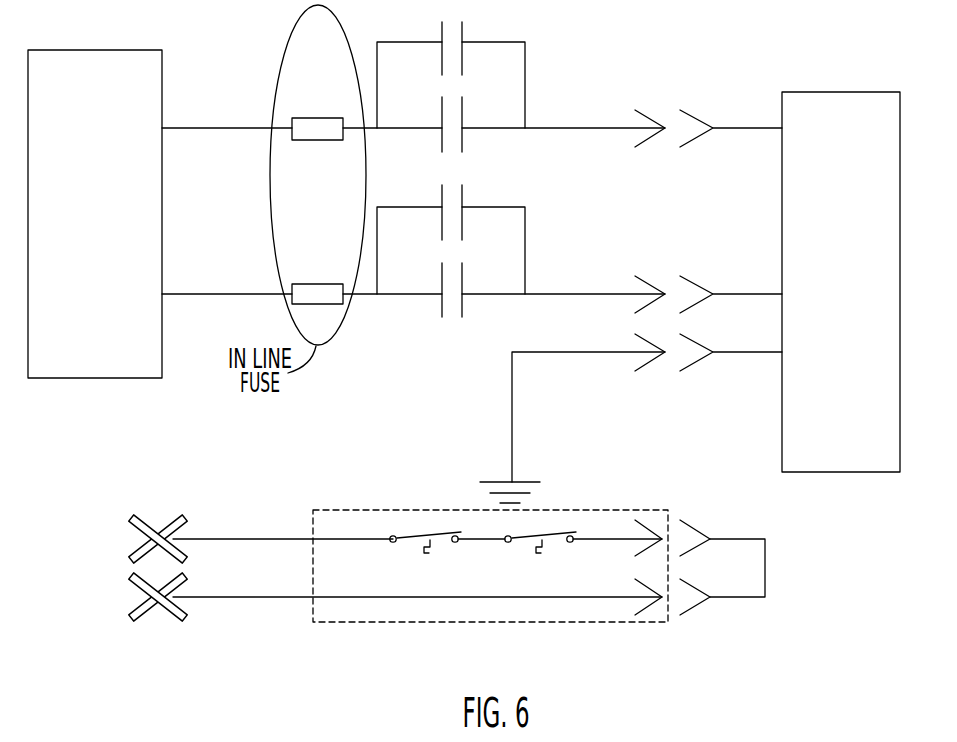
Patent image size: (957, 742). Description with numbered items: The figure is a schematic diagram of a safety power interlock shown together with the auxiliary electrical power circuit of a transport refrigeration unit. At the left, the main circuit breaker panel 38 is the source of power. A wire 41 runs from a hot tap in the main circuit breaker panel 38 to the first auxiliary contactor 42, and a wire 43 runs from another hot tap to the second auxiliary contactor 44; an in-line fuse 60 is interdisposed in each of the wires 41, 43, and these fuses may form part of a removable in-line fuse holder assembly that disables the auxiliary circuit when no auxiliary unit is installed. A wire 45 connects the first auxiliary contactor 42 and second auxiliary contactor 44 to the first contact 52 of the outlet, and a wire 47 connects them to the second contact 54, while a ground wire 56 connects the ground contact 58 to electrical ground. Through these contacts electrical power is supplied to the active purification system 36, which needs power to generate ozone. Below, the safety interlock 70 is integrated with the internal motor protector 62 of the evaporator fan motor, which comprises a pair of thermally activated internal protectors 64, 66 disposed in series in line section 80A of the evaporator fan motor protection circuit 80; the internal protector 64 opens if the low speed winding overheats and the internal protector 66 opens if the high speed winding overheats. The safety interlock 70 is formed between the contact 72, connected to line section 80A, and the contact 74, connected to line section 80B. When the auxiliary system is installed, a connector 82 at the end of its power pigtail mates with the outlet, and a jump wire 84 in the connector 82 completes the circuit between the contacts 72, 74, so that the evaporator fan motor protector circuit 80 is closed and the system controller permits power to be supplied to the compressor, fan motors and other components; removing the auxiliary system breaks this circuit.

The active purification system 36 is at (806, 92).
The main circuit breaker panel 38 is at (128, 50).
The wire 41 is at (263, 127).
The first auxiliary contactor 42 is at (463, 108).
The wire 43 is at (263, 293).
The second auxiliary contactor 44 is at (463, 28).
The wire 45 is at (585, 130).
The wire 47 is at (585, 293).
The first contact 52 is at (639, 111).
The second contact 54 is at (639, 279).
The ground wire 56 is at (605, 355).
The ground contact 58 is at (639, 336).
The in-line fuse 60 is at (323, 141).
The internal motor protector 62 is at (600, 623).
The internal protector 64 is at (440, 535).
The internal protector 66 is at (553, 532).
The safety interlock 70 is at (715, 567).
The contact 72 is at (655, 518).
The contact 74 is at (655, 610).
The evaporator fan motor protection circuit 80 is at (395, 576).
The line section 80A is at (275, 538).
The line section 80B is at (286, 606).
The connector 82 is at (747, 603).
The jump wire 84 is at (766, 570).